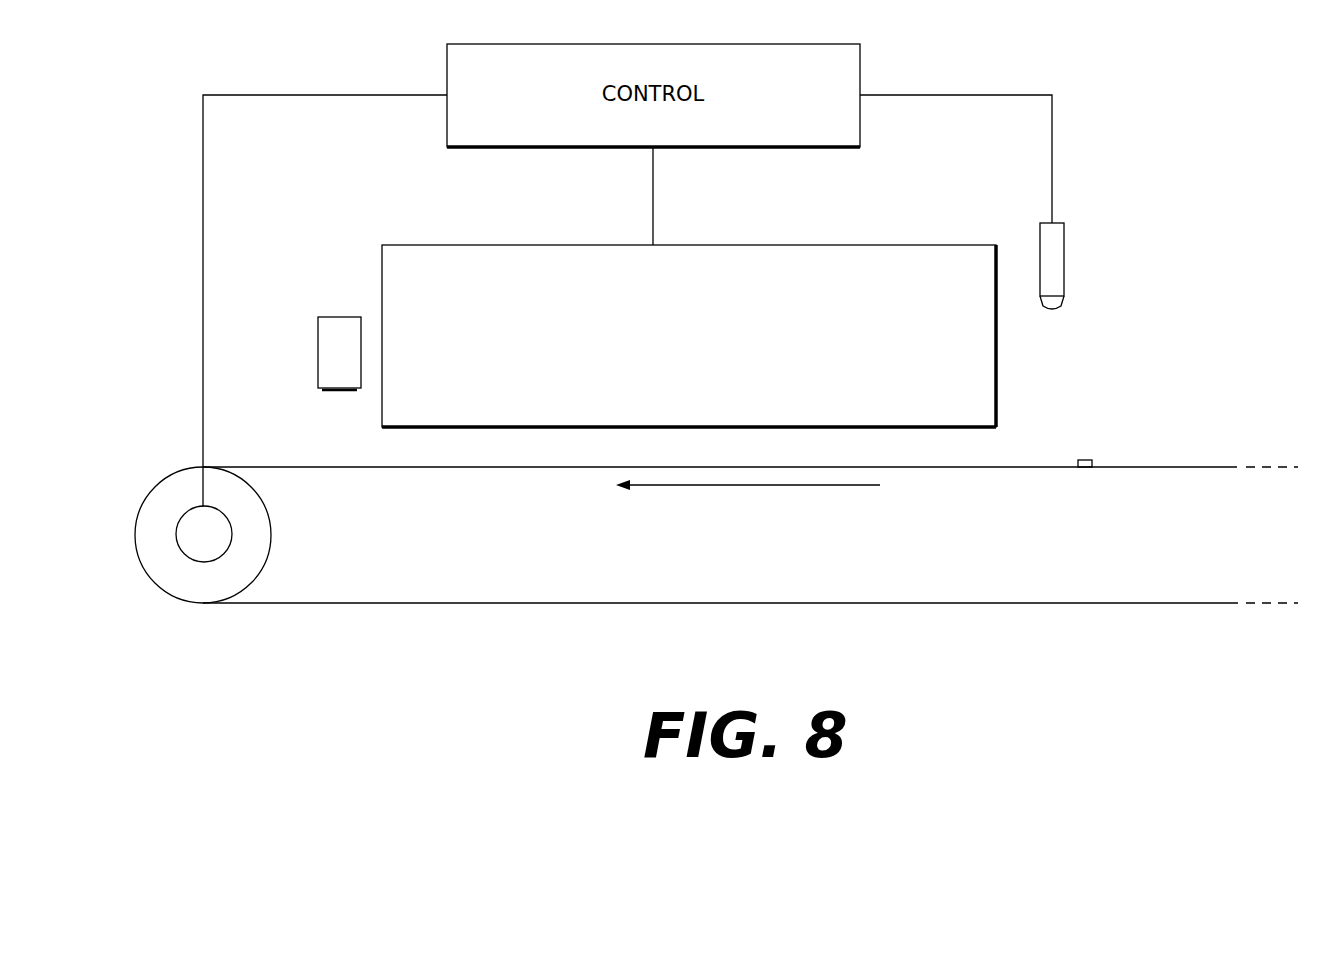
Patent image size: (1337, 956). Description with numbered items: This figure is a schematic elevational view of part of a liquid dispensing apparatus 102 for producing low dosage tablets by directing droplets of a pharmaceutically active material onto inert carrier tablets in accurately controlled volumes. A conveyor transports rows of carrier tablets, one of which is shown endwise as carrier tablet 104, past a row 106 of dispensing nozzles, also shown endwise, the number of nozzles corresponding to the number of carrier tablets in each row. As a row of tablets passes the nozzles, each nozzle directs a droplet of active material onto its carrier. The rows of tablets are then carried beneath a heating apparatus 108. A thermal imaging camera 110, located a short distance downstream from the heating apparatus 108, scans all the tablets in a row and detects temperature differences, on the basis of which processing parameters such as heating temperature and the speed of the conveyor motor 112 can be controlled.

The web / substrate 102 is at (1186, 430).
The carrier tablet 104 is at (1082, 460).
The row of dispensing nozzles 106 is at (1064, 258).
The heating apparatus 108 is at (948, 245).
The thermal imaging camera 110 is at (318, 346).
The conveyor motor 112 is at (204, 562).